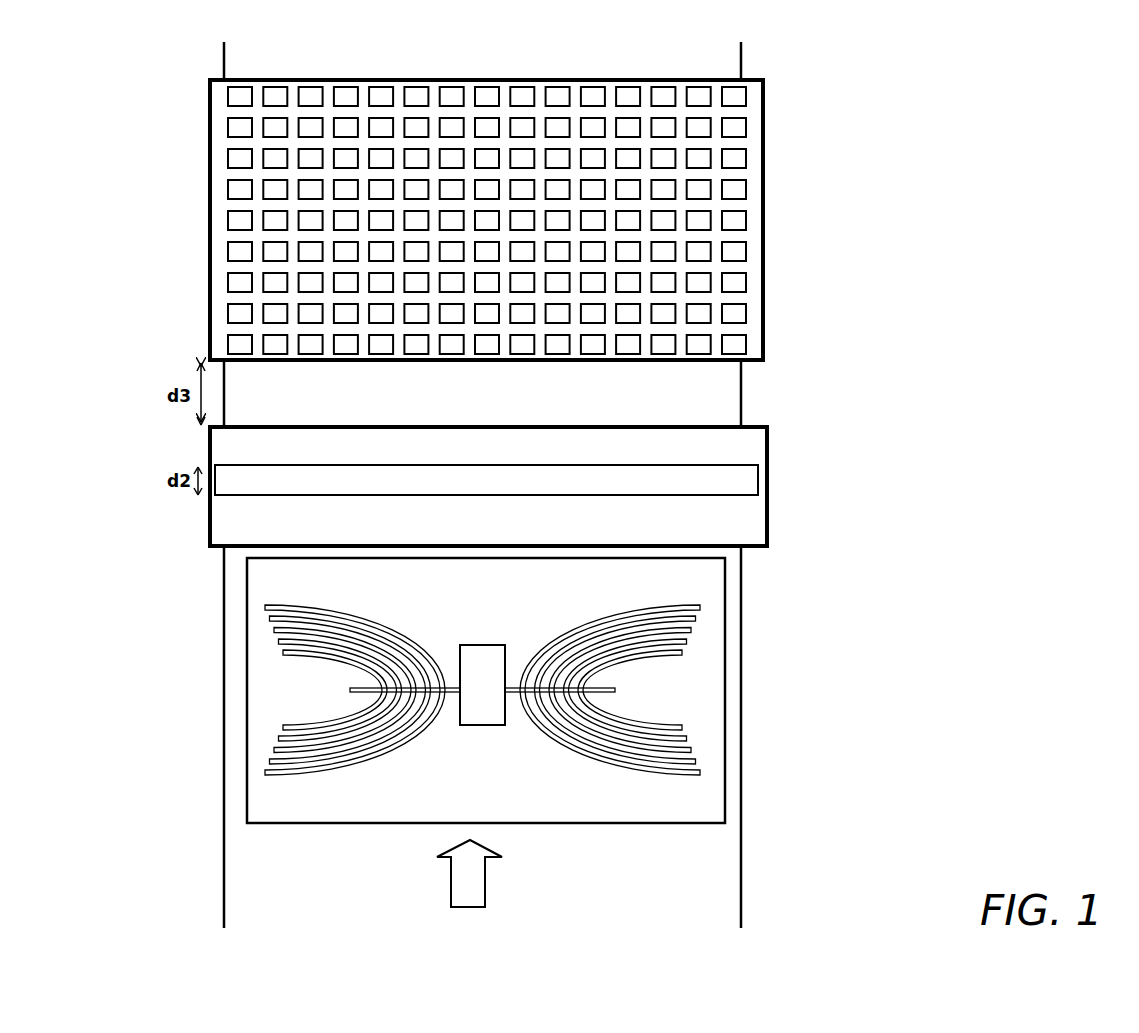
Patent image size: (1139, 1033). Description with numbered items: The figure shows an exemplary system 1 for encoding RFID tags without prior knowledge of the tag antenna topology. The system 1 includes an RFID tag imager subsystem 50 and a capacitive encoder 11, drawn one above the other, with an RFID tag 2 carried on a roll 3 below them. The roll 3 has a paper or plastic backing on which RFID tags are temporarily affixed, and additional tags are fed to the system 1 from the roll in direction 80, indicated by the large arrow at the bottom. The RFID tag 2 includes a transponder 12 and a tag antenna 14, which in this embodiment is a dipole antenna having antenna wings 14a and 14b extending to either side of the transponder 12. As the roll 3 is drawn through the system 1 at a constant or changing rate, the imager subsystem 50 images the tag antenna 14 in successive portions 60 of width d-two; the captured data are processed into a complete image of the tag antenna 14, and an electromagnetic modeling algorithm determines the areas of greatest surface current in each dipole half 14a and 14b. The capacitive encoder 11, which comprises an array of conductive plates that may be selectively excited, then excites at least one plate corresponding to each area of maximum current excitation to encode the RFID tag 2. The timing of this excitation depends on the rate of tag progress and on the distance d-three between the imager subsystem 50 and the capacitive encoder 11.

The system 1 is at (864, 246).
The RFID tag 2 is at (482, 684).
The roll 3 is at (743, 688).
The capacitive encoder 11 is at (767, 229).
The transponder 12 is at (488, 645).
The tag antenna 14 is at (482, 687).
The antenna wing 14a is at (632, 603).
The antenna wing 14b is at (331, 594).
The RFID tag imager subsystem 50 is at (511, 486).
The successive portions 60 is at (500, 465).
The direction 80 is at (497, 881).